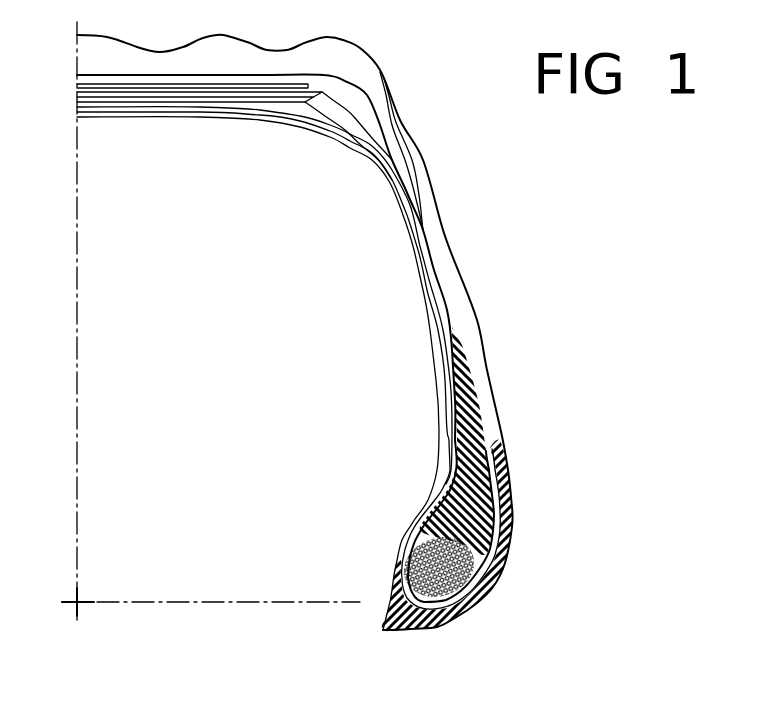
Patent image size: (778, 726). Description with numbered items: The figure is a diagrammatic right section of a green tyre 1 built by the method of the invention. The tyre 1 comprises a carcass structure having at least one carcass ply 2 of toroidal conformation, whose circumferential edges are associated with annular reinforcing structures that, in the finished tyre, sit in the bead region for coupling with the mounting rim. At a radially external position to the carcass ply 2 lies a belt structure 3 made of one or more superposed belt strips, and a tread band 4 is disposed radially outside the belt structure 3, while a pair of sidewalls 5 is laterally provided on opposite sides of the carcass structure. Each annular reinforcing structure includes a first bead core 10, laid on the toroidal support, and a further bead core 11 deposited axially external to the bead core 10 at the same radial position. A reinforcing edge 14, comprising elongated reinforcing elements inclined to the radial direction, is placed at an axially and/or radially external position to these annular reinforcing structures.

The tyre 1 is at (540, 247).
The carcass ply 2 is at (408, 205).
The belt structure 3 is at (308, 86).
The tread band 4 is at (346, 62).
The sidewalls 5 is at (487, 368).
The bead cores 10 is at (408, 556).
The bead cores 11 is at (473, 597).
The reinforcing edge 14 is at (502, 560).